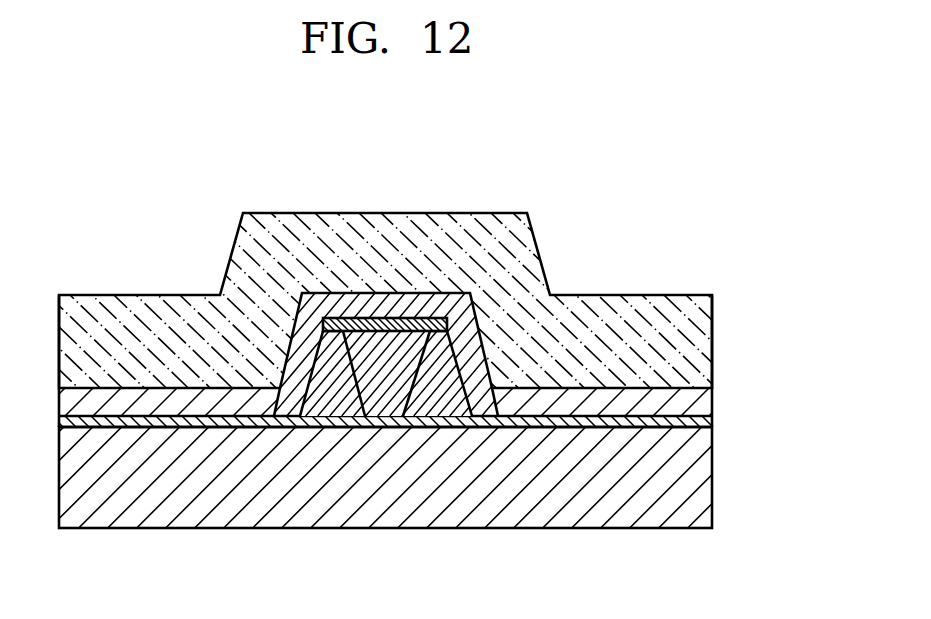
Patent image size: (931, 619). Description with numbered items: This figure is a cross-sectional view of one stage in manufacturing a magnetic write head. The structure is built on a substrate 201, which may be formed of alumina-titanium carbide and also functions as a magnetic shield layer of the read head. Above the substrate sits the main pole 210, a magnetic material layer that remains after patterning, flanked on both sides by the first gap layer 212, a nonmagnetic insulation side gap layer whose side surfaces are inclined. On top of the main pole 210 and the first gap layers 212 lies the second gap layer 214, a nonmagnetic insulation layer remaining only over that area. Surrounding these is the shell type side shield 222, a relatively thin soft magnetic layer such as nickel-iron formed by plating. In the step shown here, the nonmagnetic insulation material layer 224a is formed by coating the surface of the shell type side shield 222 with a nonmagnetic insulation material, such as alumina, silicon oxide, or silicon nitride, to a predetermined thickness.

The substrate 201 is at (705, 478).
The main pole 210 is at (383, 385).
The first gap layer 212 is at (330, 398).
The second gap layer 214 is at (387, 322).
The shell type side shield 222 is at (302, 360).
The nonmagnetic insulation material layer 224a is at (705, 352).